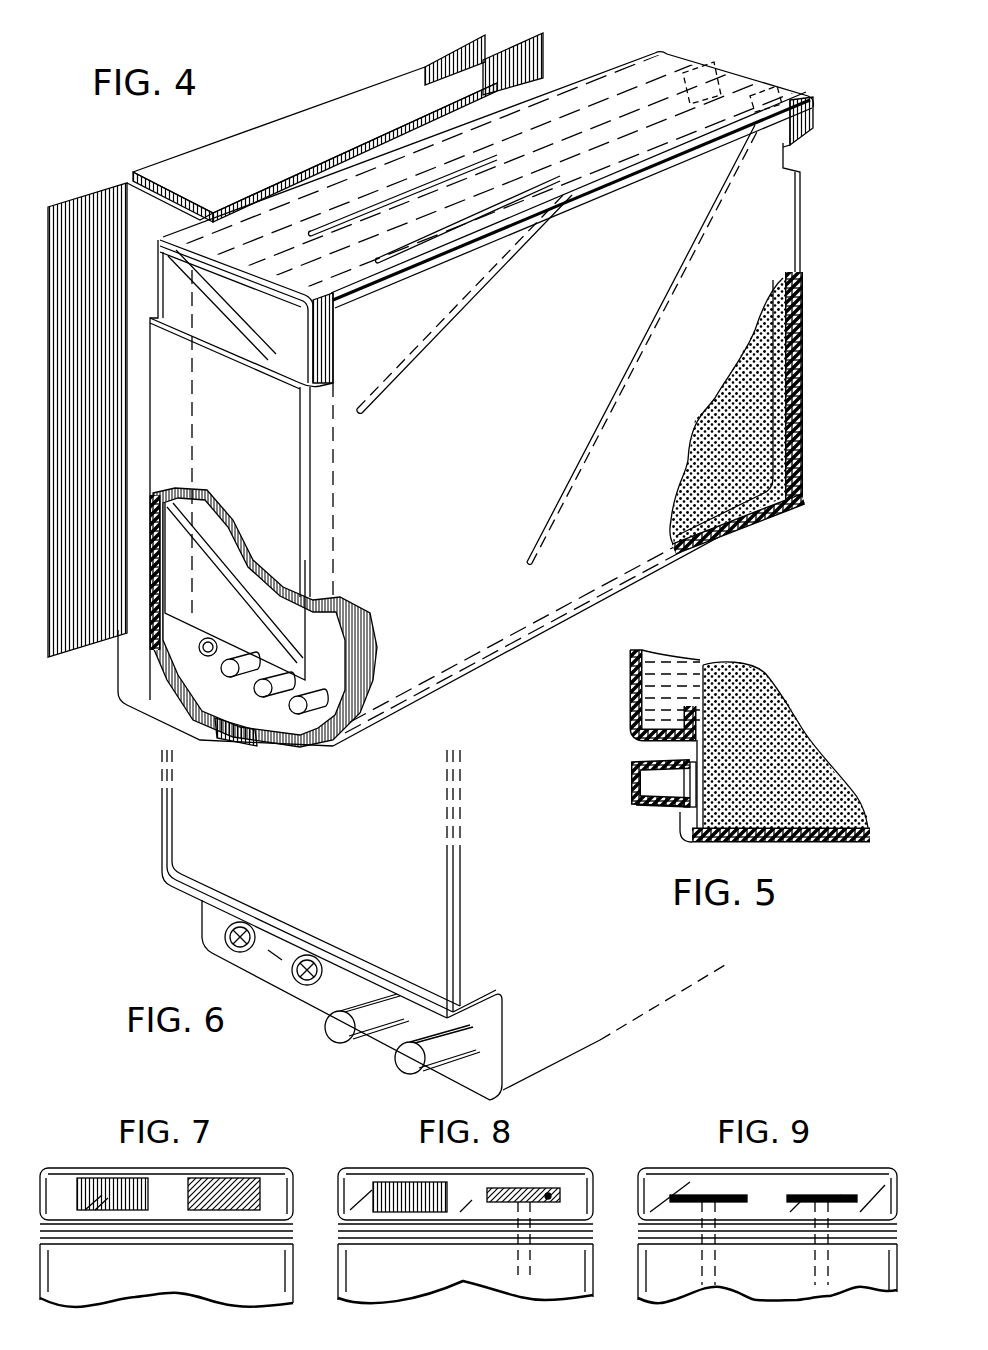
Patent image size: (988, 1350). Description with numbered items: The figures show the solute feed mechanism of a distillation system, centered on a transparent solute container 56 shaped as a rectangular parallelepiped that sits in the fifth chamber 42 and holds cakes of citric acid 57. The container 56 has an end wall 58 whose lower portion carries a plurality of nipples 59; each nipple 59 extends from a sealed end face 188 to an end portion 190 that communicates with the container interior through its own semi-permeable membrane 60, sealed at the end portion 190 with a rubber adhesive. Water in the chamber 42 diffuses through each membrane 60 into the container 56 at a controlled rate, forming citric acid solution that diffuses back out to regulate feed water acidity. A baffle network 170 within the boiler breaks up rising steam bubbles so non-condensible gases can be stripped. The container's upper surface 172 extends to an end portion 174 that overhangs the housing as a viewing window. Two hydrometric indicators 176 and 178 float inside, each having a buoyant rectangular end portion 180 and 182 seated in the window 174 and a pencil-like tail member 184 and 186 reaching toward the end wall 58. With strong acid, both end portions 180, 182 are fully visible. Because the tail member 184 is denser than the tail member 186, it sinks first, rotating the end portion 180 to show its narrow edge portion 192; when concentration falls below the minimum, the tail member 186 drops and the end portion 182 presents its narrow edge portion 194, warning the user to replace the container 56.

In FIG. 4, the fifth chamber 42 is at (803, 170).
In FIG. 4, the solute container 56 is at (183, 300).
In FIG. 7, the solute container 56 is at (302, 1262).
In FIG. 8, the solute container 56 is at (600, 1262).
In FIG. 9, the solute container 56 is at (900, 1262).
In FIG. 4, the citric acid cake 57 is at (765, 426).
In FIG. 5, the citric acid cake 57 is at (765, 707).
In FIG. 4, the end wall 58 is at (283, 306).
In FIG. 5, the end wall 58 is at (630, 677).
In FIG. 6, the end wall 58 is at (210, 867).
In FIG. 4, the nipple 59 is at (293, 707).
In FIG. 5, the nipple 59 is at (655, 808).
In FIG. 6, the nipple 59 is at (340, 1001).
In FIG. 5, the semi-permeable membrane 60 is at (700, 776).
In FIG. 6, the semi-permeable membrane 60 is at (225, 938).
In FIG. 4, the baffle network 170 is at (290, 143).
In FIG. 4, the upper surface 172 is at (405, 172).
In FIG. 4, the end portion 174 is at (813, 110).
In FIG. 7, the end portion 174 is at (186, 1162).
In FIG. 8, the end portion 174 is at (480, 1162).
In FIG. 9, the end portion 174 is at (772, 1190).
In FIG. 4, the hydrometric indicator 176 is at (623, 108).
In FIG. 4, the hydrometric indicator 178 is at (597, 160).
In FIG. 4, the rectangular end portion 180 is at (684, 88).
In FIG. 7, the rectangular end portion 180 is at (247, 1182).
In FIG. 8, the rectangular end portion 180 is at (512, 1190).
In FIG. 9, the rectangular end portion 180 is at (812, 1193).
In FIG. 4, the rectangular end portion 182 is at (770, 88).
In FIG. 7, the rectangular end portion 182 is at (103, 1188).
In FIG. 8, the rectangular end portion 182 is at (395, 1190).
In FIG. 9, the rectangular end portion 182 is at (690, 1194).
In FIG. 4, the tail member 184 is at (523, 147).
In FIG. 4, the tail member 186 is at (487, 213).
In FIG. 5, the sealed end face 188 is at (630, 785).
In FIG. 6, the sealed end face 188 is at (338, 1030).
In FIG. 5, the end portion 190 is at (680, 810).
In FIG. 6, the end portion 190 is at (273, 957).
In FIG. 8, the narrow edge portion 192 is at (550, 1195).
In FIG. 9, the narrow edge portion 192 is at (845, 1196).
In FIG. 9, the narrow edge portion 194 is at (672, 1195).